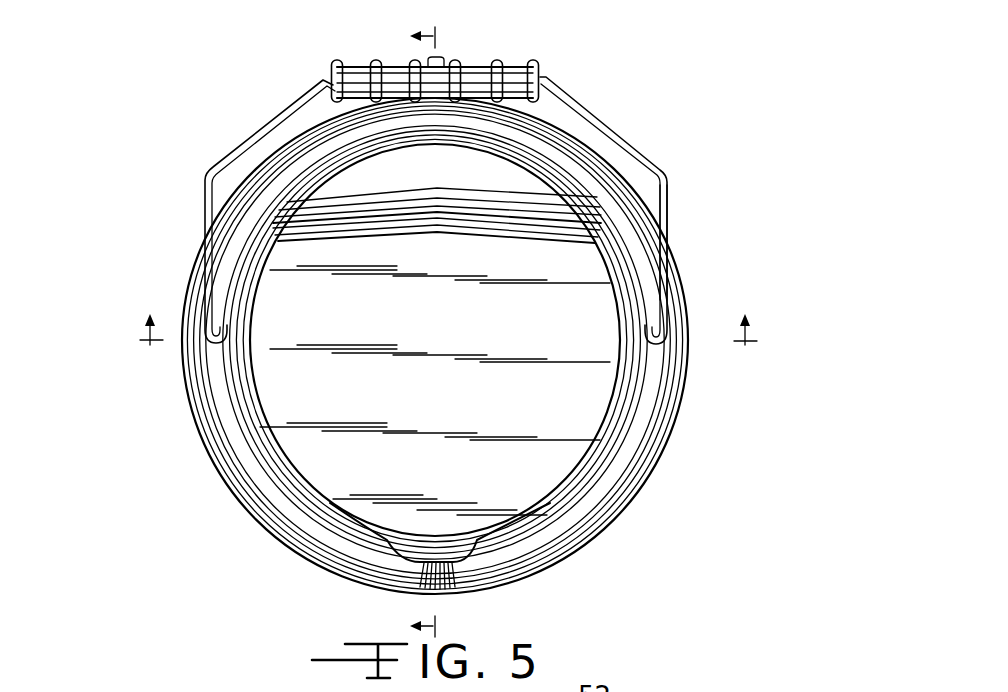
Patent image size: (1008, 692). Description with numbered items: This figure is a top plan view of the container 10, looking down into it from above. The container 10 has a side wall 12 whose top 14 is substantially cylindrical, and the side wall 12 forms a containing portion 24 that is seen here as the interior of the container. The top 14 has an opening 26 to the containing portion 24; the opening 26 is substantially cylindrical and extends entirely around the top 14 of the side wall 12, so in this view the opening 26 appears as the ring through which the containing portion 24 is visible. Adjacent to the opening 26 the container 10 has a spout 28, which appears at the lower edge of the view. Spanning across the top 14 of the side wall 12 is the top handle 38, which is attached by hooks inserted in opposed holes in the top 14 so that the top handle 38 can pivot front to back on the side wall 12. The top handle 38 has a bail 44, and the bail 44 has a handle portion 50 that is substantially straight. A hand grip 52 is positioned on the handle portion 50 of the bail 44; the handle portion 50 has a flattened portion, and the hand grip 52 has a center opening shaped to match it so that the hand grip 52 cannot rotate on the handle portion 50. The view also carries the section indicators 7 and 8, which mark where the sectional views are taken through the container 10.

The container 10 is at (236, 116).
The side wall 12 is at (665, 450).
The top 14 is at (590, 487).
The containing portion 24 is at (272, 387).
The opening 26 is at (262, 460).
The spout 28 is at (413, 572).
The top handle 38 is at (615, 128).
The bail 44 is at (658, 165).
The handle portion 50 is at (547, 76).
The hand grip 52 is at (520, 58).
The section line 7 is at (450, 342).
The section line 8 is at (435, 333).